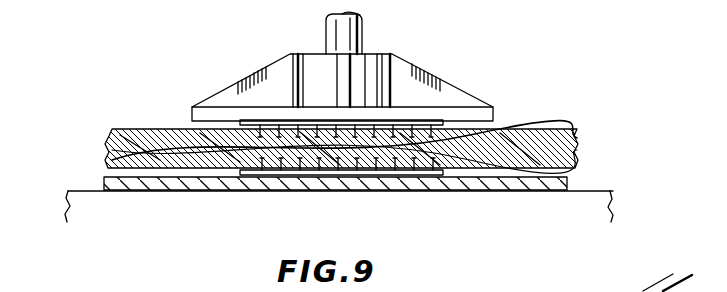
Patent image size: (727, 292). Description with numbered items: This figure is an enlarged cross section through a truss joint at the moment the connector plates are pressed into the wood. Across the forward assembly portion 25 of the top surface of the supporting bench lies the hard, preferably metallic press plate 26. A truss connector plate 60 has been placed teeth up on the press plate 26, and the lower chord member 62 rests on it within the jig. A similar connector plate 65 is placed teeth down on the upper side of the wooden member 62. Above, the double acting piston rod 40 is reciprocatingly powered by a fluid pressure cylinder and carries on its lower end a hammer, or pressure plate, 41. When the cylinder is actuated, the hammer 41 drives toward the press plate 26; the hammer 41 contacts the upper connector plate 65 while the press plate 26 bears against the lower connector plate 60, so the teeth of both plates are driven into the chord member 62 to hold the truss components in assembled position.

The assembly portion 25 is at (100, 188).
The press plate 26 is at (562, 184).
The piston rod 40 is at (363, 32).
The hammer 41 is at (428, 81).
The truss connector plate 60 is at (430, 176).
The lower chord member 62 is at (153, 137).
The connector plate 65 is at (427, 119).